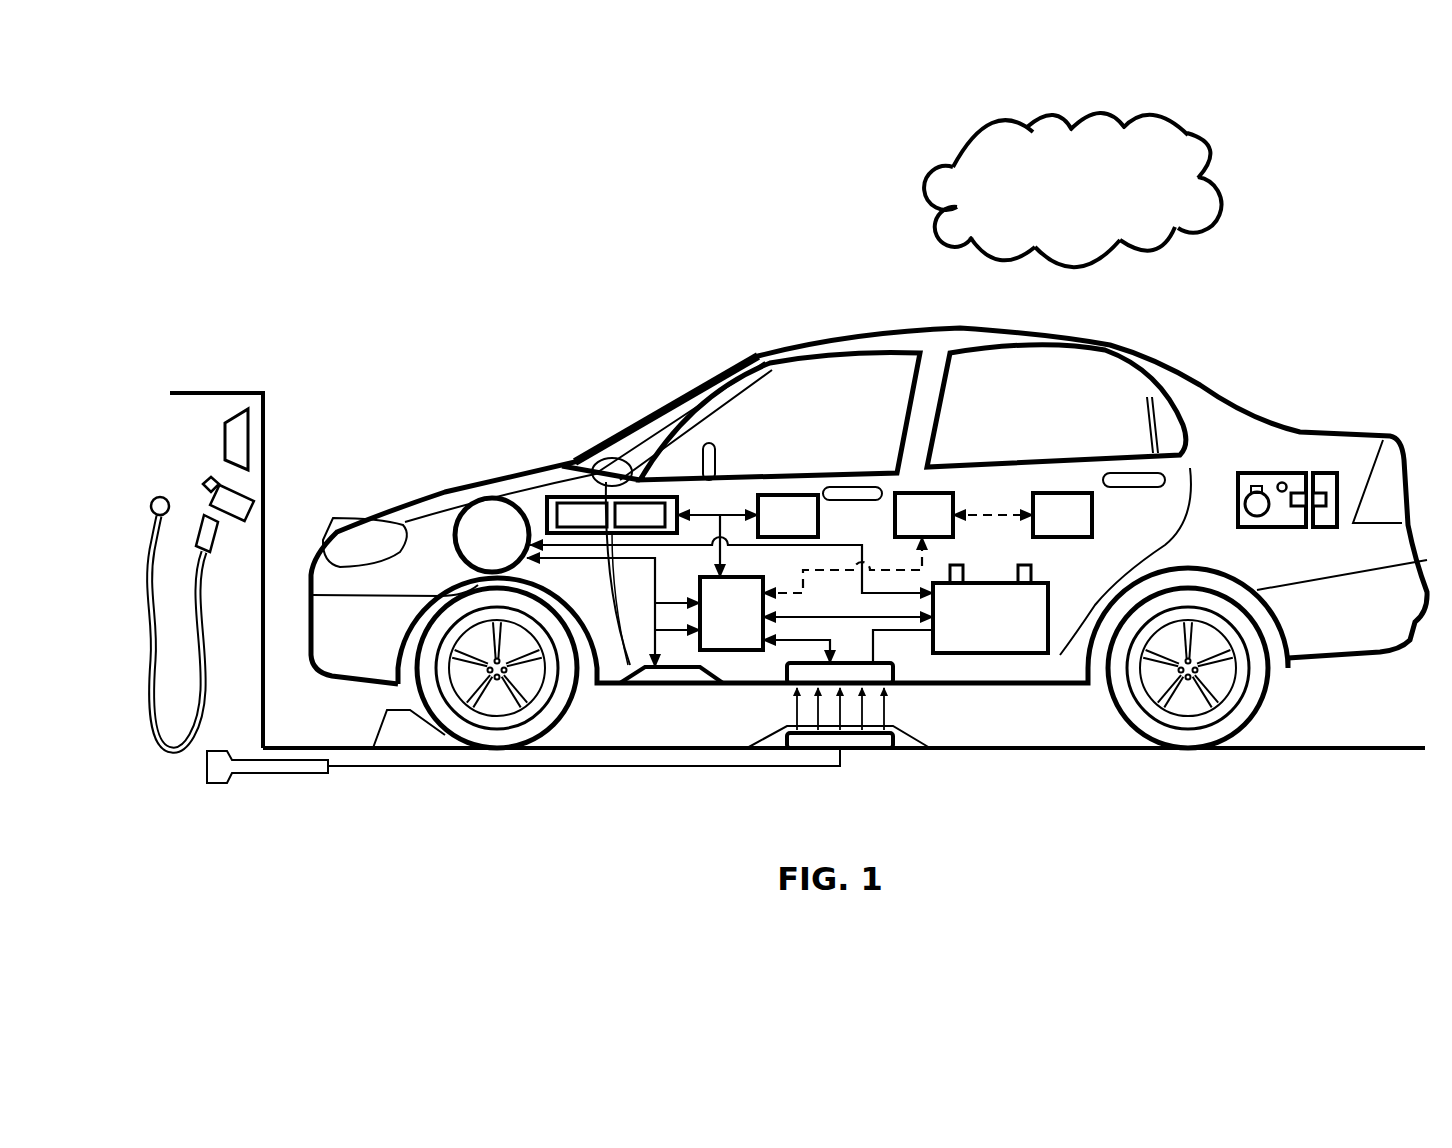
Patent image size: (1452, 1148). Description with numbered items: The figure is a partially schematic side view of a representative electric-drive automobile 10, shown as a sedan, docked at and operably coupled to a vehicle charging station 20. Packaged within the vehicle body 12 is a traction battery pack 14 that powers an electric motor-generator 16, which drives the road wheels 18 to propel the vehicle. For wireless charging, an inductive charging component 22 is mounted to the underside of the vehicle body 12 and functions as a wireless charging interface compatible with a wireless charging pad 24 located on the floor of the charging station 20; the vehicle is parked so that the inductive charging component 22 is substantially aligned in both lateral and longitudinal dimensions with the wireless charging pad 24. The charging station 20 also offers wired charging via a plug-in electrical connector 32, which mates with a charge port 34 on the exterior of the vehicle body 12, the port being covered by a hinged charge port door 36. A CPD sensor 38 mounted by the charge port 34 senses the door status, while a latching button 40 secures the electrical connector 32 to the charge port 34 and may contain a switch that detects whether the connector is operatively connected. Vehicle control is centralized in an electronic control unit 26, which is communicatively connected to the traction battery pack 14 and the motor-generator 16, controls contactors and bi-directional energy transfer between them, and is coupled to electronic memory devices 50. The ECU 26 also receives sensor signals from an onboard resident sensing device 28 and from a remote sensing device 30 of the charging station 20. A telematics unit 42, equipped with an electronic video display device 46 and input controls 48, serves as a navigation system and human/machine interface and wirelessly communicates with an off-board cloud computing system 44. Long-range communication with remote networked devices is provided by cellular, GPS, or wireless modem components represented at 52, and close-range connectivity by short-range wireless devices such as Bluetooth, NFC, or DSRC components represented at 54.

The automobile 10 is at (476, 280).
The vehicle body 12 is at (703, 308).
The traction battery pack 14 is at (1012, 655).
The electric motor-generator 16 is at (488, 499).
The road wheels 18 is at (495, 750).
The vehicle charging station 20 is at (290, 378).
The inductive charging component 22 is at (787, 670).
The wireless charging pad 24 is at (862, 750).
The electronic control unit 26 is at (716, 630).
The resident sensing device 28 is at (652, 685).
The remote sensing device 30 is at (238, 420).
The electrical connector 32 is at (207, 506).
The charge port 34 is at (1253, 487).
The charge port door 36 is at (1322, 473).
The CPD sensor 38 is at (1280, 481).
The latching button 40 is at (209, 480).
The telematics unit 42 is at (545, 520).
The cloud computing system 44 is at (1057, 198).
The electronic video display device 46 is at (568, 503).
The input controls 48 is at (632, 503).
The electronic memory device 50 is at (773, 495).
The long-range communication components 52 is at (925, 493).
The short-range wireless communication components 54 is at (1057, 493).